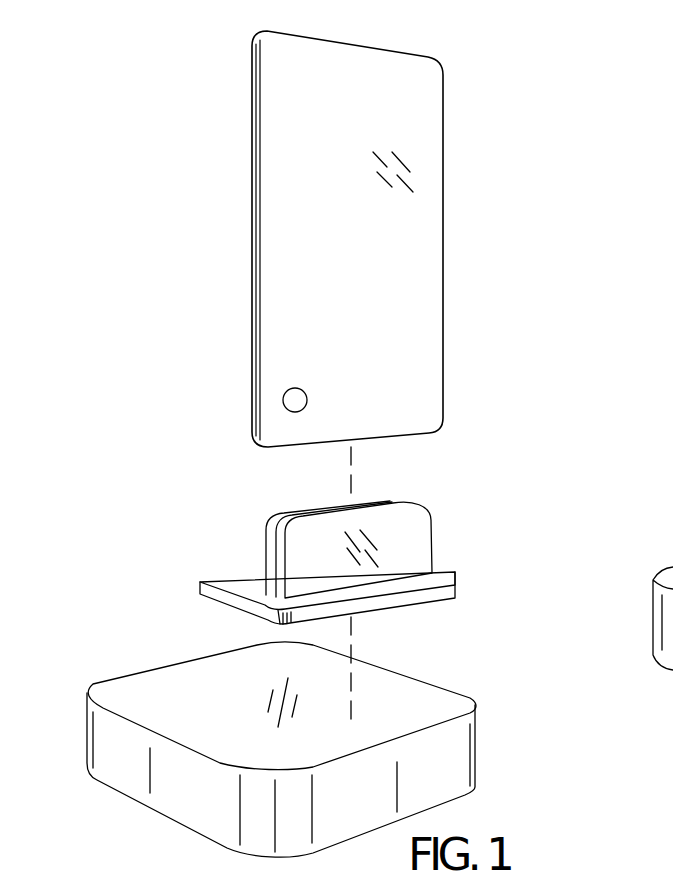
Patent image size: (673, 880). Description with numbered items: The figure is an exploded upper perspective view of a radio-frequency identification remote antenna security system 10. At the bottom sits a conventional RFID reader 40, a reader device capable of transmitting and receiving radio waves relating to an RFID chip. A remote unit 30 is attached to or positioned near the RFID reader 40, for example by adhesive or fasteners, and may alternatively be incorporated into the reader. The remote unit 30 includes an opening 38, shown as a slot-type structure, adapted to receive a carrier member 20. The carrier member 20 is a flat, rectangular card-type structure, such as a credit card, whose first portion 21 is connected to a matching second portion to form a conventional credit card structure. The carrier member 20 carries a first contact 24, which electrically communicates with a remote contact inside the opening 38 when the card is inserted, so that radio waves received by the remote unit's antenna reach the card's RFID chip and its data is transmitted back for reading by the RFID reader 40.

The radio-frequency identification remote antenna security system 10 is at (556, 387).
The carrier member 20 is at (444, 169).
The first portion 21 is at (430, 80).
The first contact 24 is at (292, 399).
The remote unit 30 is at (422, 552).
The opening 38 is at (268, 572).
The RFID reader 40 is at (480, 752).